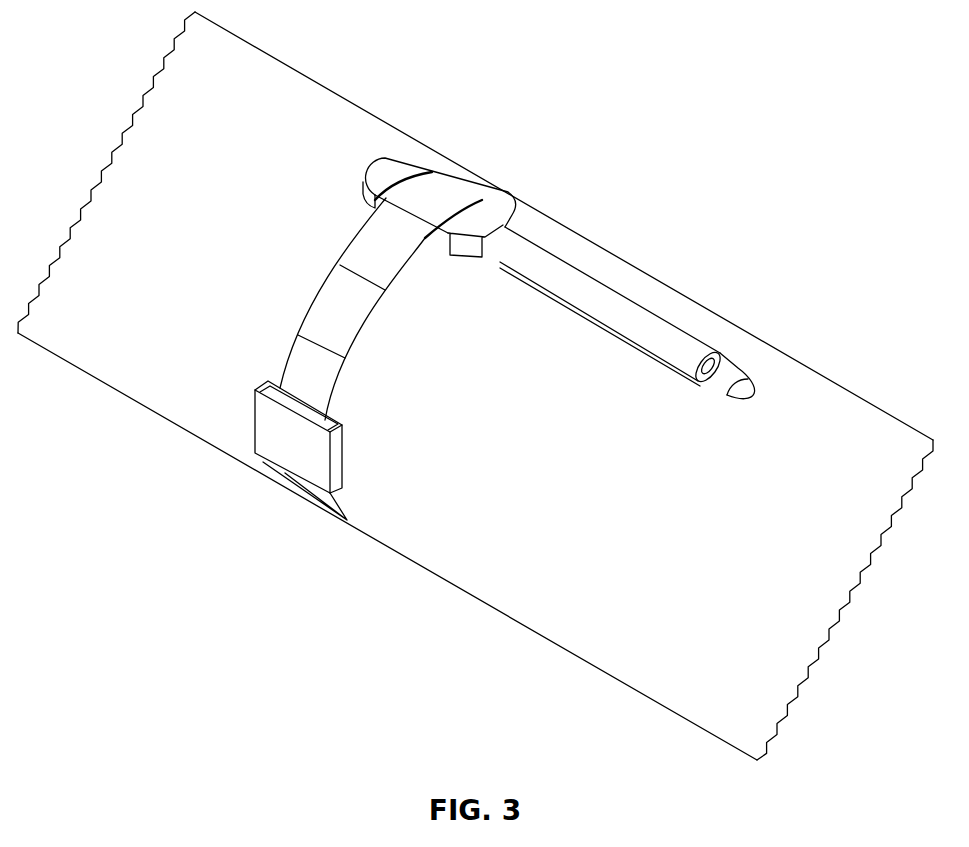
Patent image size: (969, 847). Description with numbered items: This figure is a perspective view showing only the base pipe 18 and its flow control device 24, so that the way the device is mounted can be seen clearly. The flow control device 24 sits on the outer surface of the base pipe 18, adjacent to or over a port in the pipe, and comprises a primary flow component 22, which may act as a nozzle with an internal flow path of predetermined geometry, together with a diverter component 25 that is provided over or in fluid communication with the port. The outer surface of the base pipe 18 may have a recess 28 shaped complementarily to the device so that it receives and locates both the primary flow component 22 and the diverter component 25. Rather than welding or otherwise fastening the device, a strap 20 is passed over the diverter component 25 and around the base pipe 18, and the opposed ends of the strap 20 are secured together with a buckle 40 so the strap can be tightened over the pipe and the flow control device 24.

The base pipe 18 is at (322, 130).
The strap 20 is at (433, 203).
The primary flow component 22 is at (605, 308).
The flow control device 24 is at (518, 256).
The diverter component 25 is at (388, 173).
The recess 28 is at (736, 378).
The buckle 40 is at (282, 448).